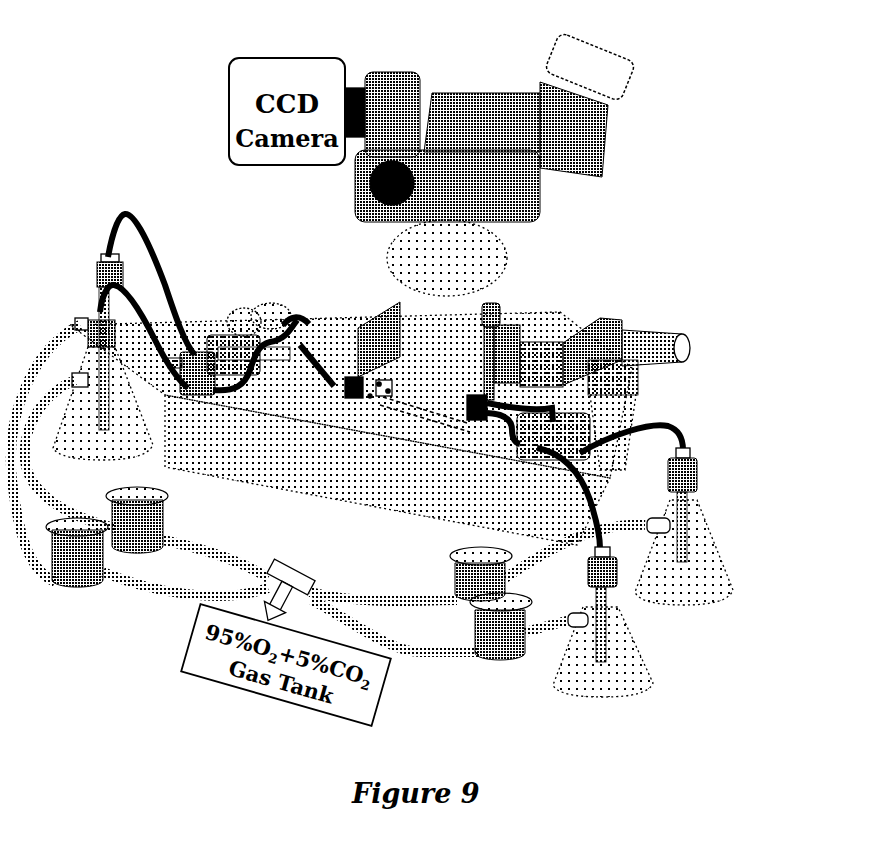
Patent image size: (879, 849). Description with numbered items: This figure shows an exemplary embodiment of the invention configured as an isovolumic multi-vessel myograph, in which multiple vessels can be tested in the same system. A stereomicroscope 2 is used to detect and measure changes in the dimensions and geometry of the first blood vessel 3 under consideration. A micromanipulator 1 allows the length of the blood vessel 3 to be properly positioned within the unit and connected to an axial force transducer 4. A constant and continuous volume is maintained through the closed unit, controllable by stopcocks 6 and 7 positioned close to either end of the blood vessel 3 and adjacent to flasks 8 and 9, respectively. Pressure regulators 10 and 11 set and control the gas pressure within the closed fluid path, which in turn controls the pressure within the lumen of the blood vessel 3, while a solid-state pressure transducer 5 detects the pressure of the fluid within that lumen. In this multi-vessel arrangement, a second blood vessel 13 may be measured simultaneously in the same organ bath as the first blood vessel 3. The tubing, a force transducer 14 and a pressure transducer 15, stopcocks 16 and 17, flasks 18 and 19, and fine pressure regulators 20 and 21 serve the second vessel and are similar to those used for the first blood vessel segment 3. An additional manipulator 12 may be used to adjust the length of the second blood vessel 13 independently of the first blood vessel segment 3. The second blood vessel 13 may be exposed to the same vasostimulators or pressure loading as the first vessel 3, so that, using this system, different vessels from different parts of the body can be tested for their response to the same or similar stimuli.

The micromanipulator 1 is at (677, 312).
The stereomicroscope 2 is at (600, 237).
The blood vessel 3 is at (414, 337).
The axial force transducer 4 is at (343, 290).
The solid-state pressure transducer 5 is at (268, 220).
The stopcock 6 is at (205, 238).
The stopcock 7 is at (747, 383).
The flask 8 is at (82, 242).
The flask 9 is at (731, 495).
The pressure regulator 10 is at (130, 605).
The pressure regulator 11 is at (417, 565).
The additional manipulator 12 is at (605, 296).
The second blood vessel 13 is at (453, 337).
The force transducer 14 is at (316, 290).
The pressure transducer 15 is at (251, 230).
The stopcock 16 is at (196, 292).
The stopcock 17 is at (743, 415).
The flask 18 is at (50, 303).
The flask 19 is at (690, 637).
The fine pressure regulator 20 is at (182, 500).
The fine pressure regulator 21 is at (457, 628).